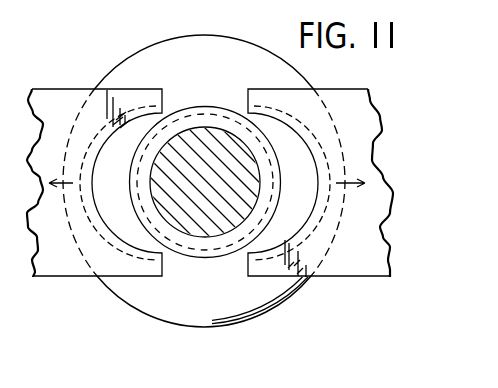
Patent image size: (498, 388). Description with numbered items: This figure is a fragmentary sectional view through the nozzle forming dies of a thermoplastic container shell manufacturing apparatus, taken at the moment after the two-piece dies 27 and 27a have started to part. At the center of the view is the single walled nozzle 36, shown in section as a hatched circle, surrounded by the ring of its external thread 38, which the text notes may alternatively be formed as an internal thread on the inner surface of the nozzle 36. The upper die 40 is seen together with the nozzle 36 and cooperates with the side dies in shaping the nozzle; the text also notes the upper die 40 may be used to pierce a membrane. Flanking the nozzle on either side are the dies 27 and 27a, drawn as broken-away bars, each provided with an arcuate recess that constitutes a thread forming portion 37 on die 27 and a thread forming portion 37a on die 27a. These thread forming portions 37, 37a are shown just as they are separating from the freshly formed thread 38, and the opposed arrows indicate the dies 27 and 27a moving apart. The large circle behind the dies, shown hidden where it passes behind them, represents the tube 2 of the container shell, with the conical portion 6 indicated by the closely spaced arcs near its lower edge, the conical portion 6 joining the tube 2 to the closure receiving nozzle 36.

The tube 2 is at (290, 302).
The conical portion 6 is at (241, 305).
The die 27 is at (94, 201).
The die 27a is at (332, 201).
The single walled nozzle 36 is at (205, 243).
The thread forming portion 37 is at (106, 150).
The thread forming portion 37a is at (302, 152).
The external thread 38 is at (185, 110).
The upper die 40 is at (208, 137).